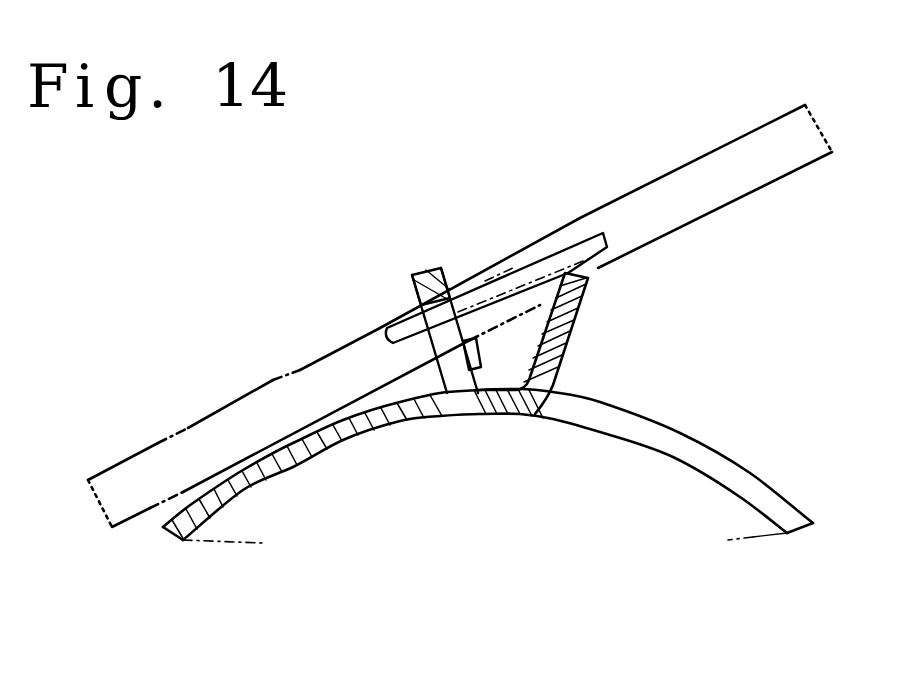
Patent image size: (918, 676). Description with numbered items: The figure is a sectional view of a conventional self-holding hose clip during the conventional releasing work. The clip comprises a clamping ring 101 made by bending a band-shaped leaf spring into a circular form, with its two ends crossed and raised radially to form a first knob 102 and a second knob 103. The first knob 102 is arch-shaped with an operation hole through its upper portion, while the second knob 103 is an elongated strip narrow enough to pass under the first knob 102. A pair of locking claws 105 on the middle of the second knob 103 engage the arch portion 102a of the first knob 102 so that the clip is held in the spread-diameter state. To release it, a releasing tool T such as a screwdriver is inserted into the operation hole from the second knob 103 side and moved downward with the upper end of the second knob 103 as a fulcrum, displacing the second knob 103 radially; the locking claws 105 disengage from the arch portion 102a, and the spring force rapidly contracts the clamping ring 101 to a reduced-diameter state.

The releasing tool T is at (728, 142).
The clamping ring 101 is at (247, 484).
The first knob 102 is at (420, 274).
The arch portion 102a is at (478, 393).
The second knob 103 is at (577, 332).
The locking claws 105 is at (424, 380).